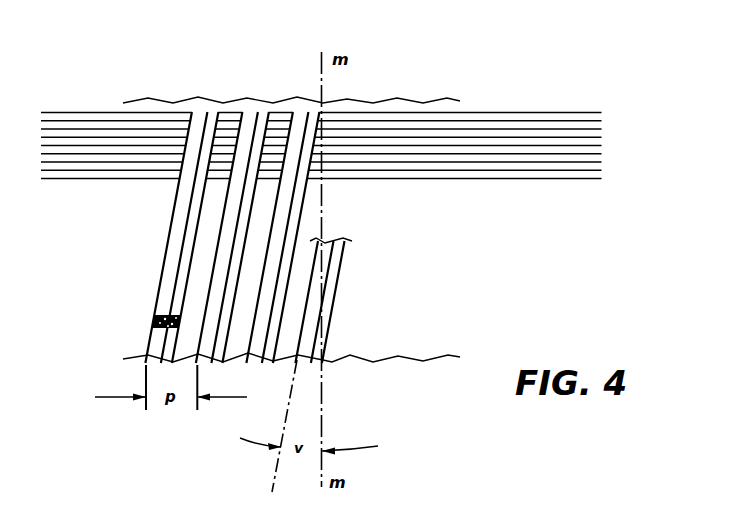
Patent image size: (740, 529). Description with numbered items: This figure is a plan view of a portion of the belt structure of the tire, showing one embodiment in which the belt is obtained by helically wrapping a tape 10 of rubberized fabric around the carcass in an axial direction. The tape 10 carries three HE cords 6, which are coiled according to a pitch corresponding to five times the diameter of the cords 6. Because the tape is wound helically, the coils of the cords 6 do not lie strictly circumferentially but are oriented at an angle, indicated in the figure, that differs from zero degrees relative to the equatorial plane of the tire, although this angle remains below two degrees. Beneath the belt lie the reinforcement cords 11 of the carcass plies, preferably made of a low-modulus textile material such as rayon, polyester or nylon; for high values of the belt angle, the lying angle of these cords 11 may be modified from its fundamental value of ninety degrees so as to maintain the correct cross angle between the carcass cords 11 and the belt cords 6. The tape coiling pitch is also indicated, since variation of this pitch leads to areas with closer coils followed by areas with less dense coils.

The HE cords 6 is at (192, 239).
The tape of rubberized fabric 10 is at (153, 322).
The reinforcement cords 11 is at (423, 180).